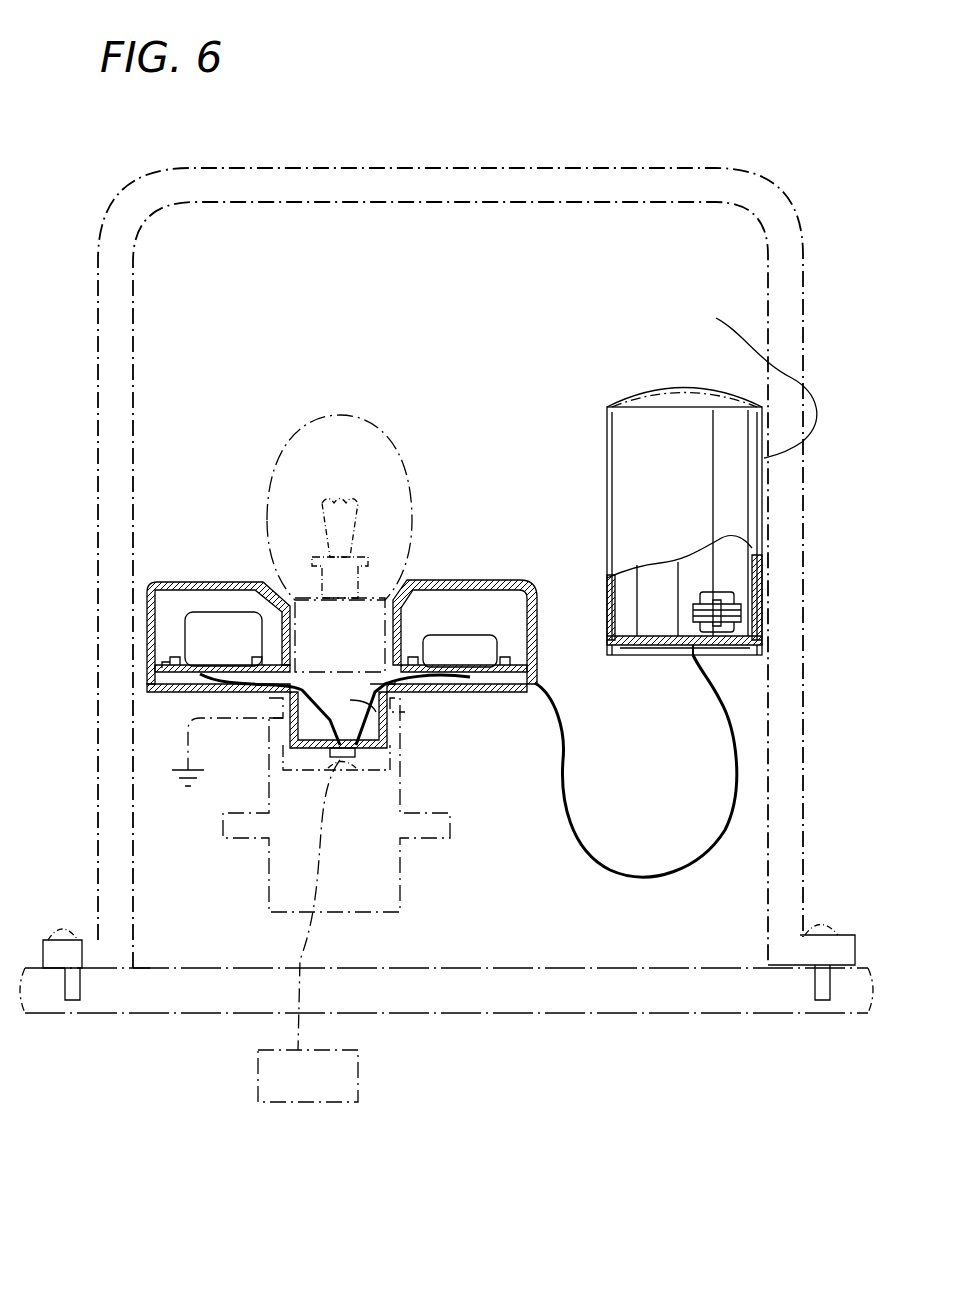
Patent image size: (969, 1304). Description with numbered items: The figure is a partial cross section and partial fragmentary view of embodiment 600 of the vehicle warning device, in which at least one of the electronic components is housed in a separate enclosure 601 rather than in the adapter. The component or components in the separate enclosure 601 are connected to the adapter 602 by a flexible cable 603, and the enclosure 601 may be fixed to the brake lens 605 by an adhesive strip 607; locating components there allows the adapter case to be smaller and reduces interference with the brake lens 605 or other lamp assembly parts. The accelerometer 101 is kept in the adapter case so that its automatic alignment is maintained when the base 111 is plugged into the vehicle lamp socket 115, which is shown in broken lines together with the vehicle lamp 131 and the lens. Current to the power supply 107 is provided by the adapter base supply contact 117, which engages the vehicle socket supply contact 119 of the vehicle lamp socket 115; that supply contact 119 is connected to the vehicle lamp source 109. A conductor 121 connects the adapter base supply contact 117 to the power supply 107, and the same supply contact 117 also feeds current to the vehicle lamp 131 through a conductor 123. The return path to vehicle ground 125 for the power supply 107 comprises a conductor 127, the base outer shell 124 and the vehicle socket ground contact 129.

The embodiment of the vehicle warning device 600 is at (238, 338).
The separate enclosure 601 is at (606, 425).
The adapter 602 is at (536, 637).
The flexible cable 603 is at (641, 876).
The brake lens 605 is at (135, 918).
The adhesive strip 607 is at (740, 379).
The accelerometer 101 is at (454, 640).
The power supply 107 is at (186, 626).
The vehicle lamp source 109 is at (258, 1092).
The base 111 is at (392, 735).
The vehicle lamp socket 115 is at (396, 760).
The adapter base supply contact 117 is at (392, 786).
The vehicle socket supply contact 119 is at (333, 763).
The conductor 121 is at (388, 698).
The conductor 123 is at (386, 706).
The base outer shell 124 is at (300, 732).
The vehicle ground 125 is at (172, 778).
The conductor 127 is at (232, 705).
The vehicle socket ground contact 129 is at (285, 722).
The vehicle lamp 131 is at (360, 415).